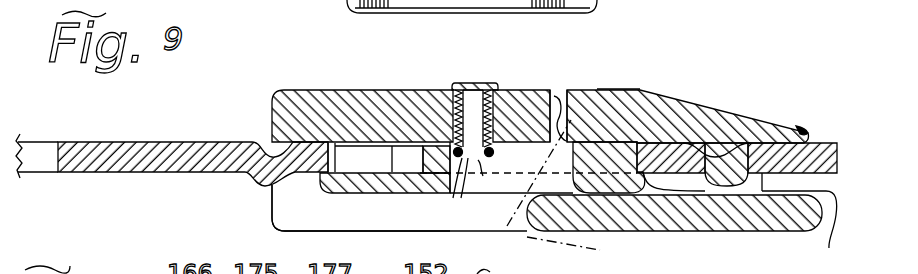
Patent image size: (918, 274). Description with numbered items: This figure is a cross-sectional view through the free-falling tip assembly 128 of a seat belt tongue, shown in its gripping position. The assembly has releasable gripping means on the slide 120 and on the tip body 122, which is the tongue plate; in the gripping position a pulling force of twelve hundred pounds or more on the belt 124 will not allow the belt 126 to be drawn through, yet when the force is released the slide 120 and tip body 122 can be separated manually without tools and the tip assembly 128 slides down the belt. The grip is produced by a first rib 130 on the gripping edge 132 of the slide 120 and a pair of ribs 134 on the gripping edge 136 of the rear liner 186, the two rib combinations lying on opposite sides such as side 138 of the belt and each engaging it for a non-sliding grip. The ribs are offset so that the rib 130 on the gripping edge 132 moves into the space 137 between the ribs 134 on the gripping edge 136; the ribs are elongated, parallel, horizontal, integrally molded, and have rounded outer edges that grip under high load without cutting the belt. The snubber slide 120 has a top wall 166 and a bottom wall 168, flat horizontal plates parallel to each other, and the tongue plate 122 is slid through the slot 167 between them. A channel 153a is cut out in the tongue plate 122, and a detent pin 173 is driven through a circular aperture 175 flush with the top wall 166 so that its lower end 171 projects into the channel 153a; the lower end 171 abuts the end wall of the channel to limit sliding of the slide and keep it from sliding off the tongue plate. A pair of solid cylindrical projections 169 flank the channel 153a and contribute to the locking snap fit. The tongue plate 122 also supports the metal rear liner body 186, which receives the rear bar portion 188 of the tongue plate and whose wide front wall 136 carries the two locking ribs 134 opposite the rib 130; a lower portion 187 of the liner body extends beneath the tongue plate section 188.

The slide 120 is at (278, 210).
The tip body 122 is at (832, 143).
The belt 124 is at (596, 244).
The belt 126 is at (670, 268).
The tip assembly 128 is at (762, 109).
The first rib 130 is at (503, 0).
The gripping edge 132 is at (531, 89).
The pair of ribs 134 is at (135, 142).
The gripping edge 136 is at (660, 95).
The space 137 is at (605, 89).
The side of belt 138 is at (535, 258).
The channel 153a is at (501, 176).
The top wall 166 is at (320, 100).
The slot 167 is at (456, 195).
The bottom wall 168 is at (749, 222).
The solid cylindrical projections 169 is at (423, 193).
The lower end of pin 171 is at (458, 200).
The detent pin 173 is at (458, 85).
The circular aperture 175 is at (475, 109).
The rear liner body 186 is at (703, 112).
The lower portion 187 is at (743, 221).
The rear bar portion 188 is at (708, 142).